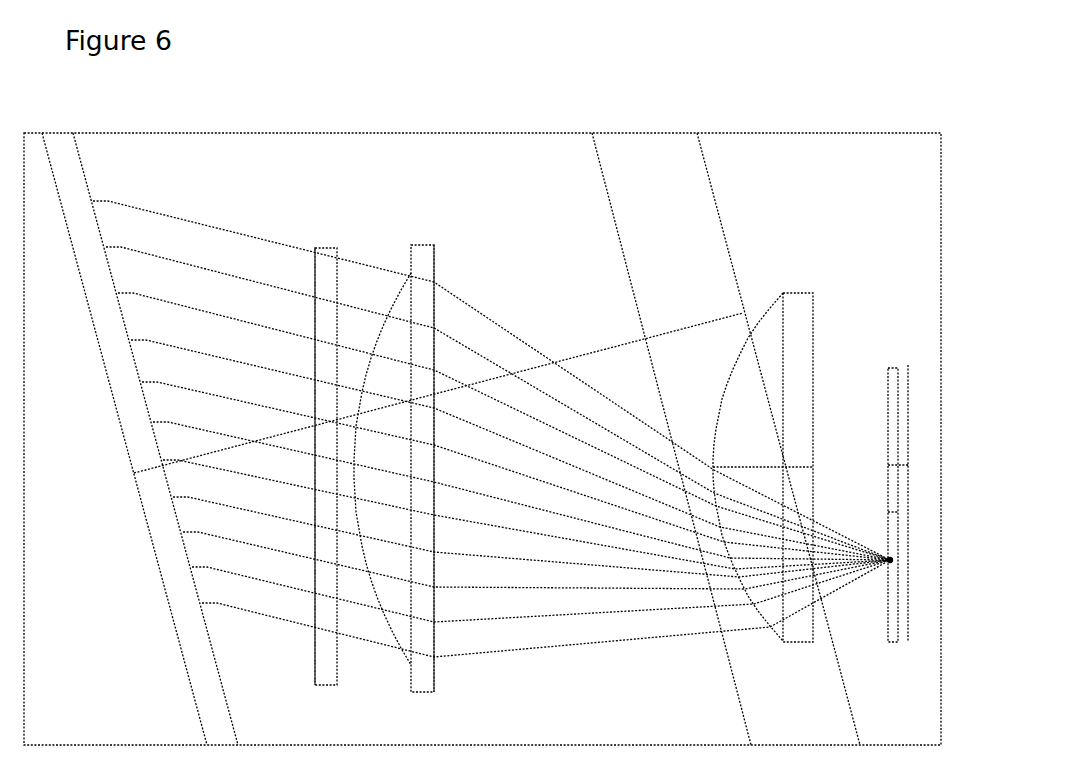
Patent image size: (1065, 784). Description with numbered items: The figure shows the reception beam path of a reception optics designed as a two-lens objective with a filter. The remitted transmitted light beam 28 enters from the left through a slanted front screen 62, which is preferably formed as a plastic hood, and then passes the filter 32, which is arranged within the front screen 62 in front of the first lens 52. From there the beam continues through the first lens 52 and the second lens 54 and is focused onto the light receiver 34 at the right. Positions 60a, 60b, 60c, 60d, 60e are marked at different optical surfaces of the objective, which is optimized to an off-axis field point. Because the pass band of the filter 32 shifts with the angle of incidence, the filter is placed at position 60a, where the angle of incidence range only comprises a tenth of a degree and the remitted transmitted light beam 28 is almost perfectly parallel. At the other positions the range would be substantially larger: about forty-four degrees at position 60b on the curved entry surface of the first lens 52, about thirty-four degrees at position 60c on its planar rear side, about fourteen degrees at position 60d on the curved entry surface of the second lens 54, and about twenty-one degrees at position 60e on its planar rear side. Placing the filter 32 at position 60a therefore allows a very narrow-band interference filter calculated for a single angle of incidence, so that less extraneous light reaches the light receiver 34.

The remitted transmitted light beam 28 is at (618, 403).
The filter 32 is at (327, 667).
The light receiver 34 is at (892, 515).
The first lens 52 is at (398, 563).
The second lens 54 is at (768, 337).
The position 60a is at (307, 287).
The position 60b is at (392, 292).
The position 60c is at (437, 310).
The position 60d is at (752, 618).
The position 60e is at (878, 537).
The front screen 62 is at (192, 648).